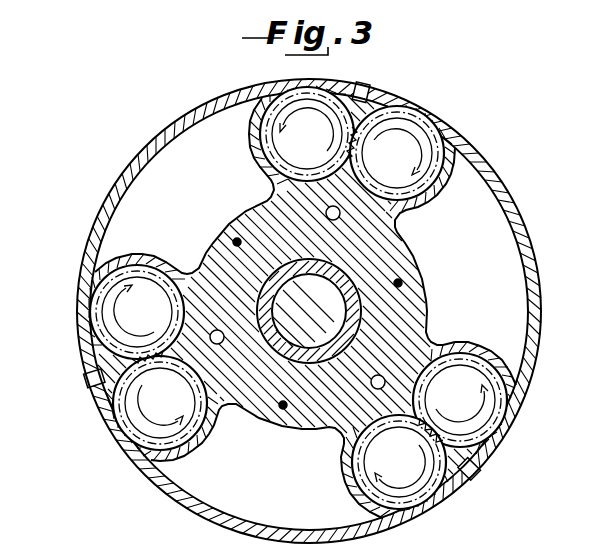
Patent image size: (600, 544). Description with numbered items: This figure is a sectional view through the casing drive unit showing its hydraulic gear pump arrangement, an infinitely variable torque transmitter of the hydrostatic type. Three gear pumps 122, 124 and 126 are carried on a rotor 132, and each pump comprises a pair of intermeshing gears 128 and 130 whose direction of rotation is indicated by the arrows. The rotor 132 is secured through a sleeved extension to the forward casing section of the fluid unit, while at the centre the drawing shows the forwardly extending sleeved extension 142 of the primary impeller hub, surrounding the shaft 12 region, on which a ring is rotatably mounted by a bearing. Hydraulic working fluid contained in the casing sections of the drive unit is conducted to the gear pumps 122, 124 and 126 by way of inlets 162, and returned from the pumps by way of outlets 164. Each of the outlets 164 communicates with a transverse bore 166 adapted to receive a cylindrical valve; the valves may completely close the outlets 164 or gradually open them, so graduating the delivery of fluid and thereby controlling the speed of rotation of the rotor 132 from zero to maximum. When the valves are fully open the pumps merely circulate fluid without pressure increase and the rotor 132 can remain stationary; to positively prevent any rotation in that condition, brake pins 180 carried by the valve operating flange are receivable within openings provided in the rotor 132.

The shaft 12 is at (313, 329).
The gear pump 122 is at (285, 139).
The gear pump 124 is at (481, 365).
The gear pump 126 is at (198, 437).
The pump gear 128 is at (266, 174).
The pump gear 130 is at (428, 207).
The rotor 132 is at (482, 152).
The sleeved extension 142 is at (358, 339).
The inlet 162 is at (367, 84).
The outlet 164 is at (332, 200).
The transverse bore 166 is at (334, 220).
The brake pin 180 is at (241, 242).